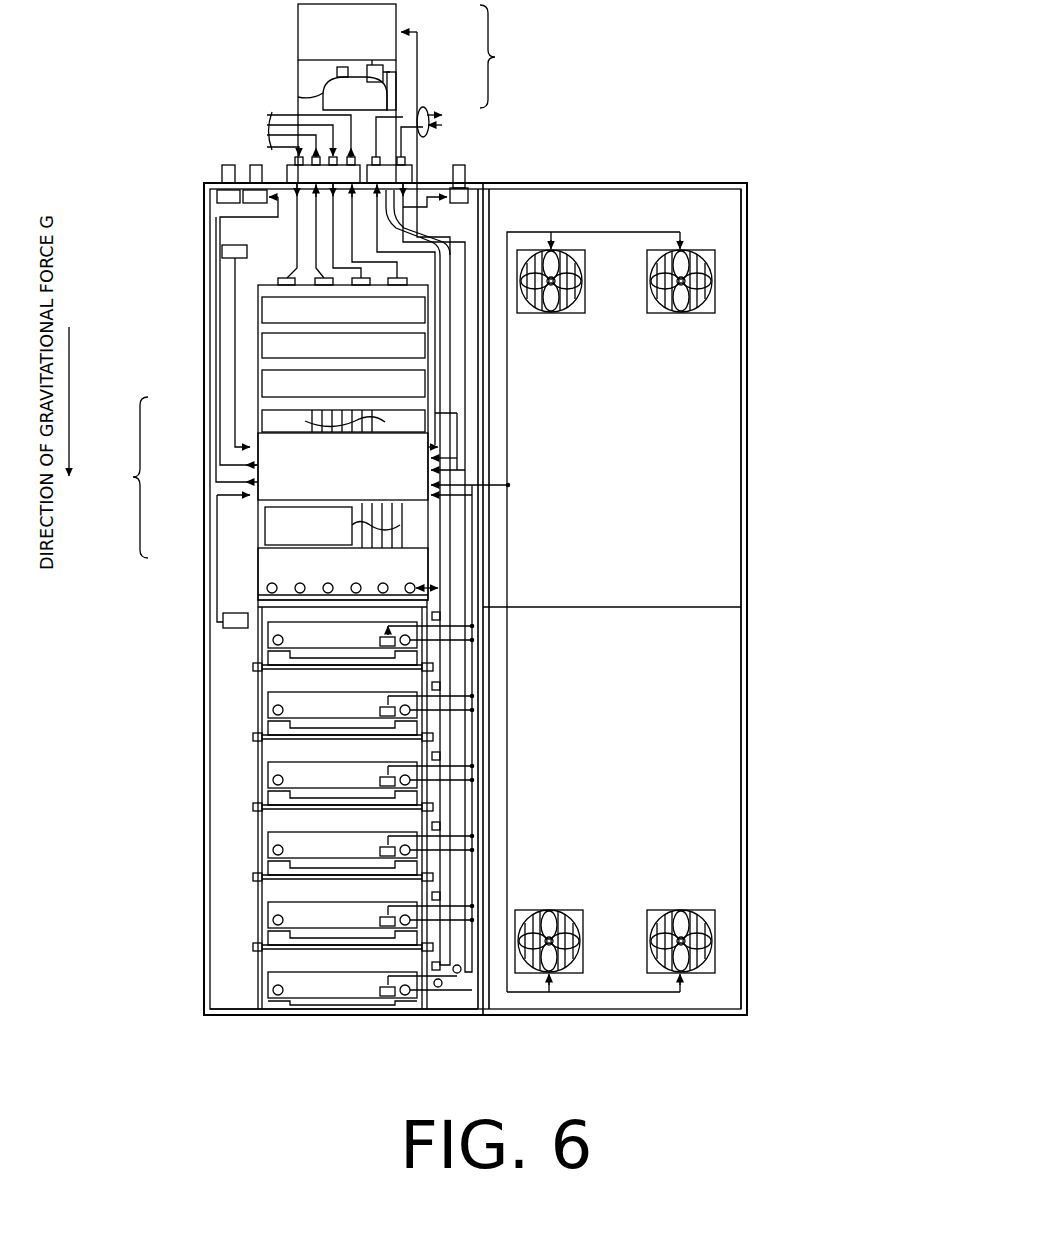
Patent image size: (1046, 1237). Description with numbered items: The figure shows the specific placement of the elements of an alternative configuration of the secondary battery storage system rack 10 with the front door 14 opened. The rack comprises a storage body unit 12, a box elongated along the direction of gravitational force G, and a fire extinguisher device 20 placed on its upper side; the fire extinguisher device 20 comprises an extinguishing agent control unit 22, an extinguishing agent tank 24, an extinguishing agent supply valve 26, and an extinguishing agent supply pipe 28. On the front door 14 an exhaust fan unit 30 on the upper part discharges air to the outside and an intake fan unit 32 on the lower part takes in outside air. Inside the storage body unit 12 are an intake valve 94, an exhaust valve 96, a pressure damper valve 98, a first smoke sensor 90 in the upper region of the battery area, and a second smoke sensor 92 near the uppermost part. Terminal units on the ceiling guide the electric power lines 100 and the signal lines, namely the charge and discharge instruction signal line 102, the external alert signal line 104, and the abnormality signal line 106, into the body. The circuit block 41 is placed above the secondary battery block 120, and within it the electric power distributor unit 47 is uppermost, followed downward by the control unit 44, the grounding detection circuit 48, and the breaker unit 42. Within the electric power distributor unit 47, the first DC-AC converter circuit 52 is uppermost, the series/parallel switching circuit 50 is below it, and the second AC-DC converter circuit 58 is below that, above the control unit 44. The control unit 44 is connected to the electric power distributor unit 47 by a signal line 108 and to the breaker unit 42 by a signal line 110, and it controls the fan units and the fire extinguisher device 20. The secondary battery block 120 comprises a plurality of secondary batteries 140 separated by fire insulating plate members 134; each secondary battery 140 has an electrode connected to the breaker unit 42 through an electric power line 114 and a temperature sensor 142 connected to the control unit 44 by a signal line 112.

The secondary battery storage system rack 10 is at (702, 106).
The storage body unit 12 is at (322, 1016).
The front door 14 is at (748, 985).
The fire extinguisher device 20 is at (427, 483).
The extinguishing agent control unit 22 is at (393, 12).
The extinguishing agent tank 24 is at (352, 90).
The extinguishing agent supply valve 26 is at (376, 66).
The extinguishing agent supply pipe 28 is at (397, 102).
The exhaust fan unit 30 is at (718, 276).
The intake fan unit 32 is at (718, 941).
The circuit block 41 is at (335, 439).
The breaker unit 42 is at (272, 570).
The control unit 44 is at (272, 481).
The electric power distributor unit 47 is at (272, 406).
The grounding detection circuit 48 is at (270, 531).
The series/parallel switching circuit 50 is at (266, 350).
The first DC-AC converter circuit 52 is at (266, 312).
The second AC-DC converter circuit 58 is at (266, 382).
The first smoke sensor 90 is at (238, 621).
The second smoke sensor 92 is at (230, 252).
The intake valve 94 is at (472, 190).
The exhaust valve 96 is at (228, 197).
The pressure damper valve 98 is at (250, 180).
The electric power line 100 is at (268, 108).
The charge and discharge instruction signal line 102 is at (430, 130).
The external alert signal line 104 is at (296, 32).
The abnormality signal line 106 is at (361, 314).
The signal line 108 is at (385, 422).
The signal line 110 is at (400, 525).
The signal line 112 is at (458, 975).
The electric power line 114 is at (437, 990).
The secondary battery block 120 is at (248, 787).
The fire insulating plate member 134 is at (272, 599).
The secondary battery 140 is at (276, 637).
The temperature sensor 142 is at (386, 1000).